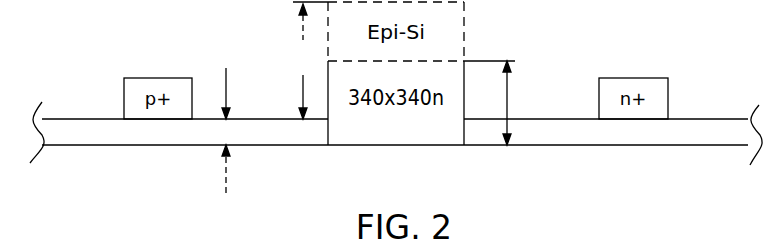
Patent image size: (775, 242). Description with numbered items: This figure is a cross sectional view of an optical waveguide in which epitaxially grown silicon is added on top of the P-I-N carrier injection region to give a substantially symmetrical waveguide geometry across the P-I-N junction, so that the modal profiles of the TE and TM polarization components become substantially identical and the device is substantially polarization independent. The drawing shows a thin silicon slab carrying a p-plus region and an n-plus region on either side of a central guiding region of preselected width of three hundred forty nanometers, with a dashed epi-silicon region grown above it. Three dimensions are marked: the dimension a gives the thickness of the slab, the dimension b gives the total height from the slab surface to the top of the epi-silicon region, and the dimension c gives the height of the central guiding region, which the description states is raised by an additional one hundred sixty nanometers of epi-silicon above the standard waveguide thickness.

The substrate thickness a is at (225, 80).
The height of epitaxial silicon structure above substrate b is at (310, 60).
The height of 340x340 nm silicon block c is at (508, 95).